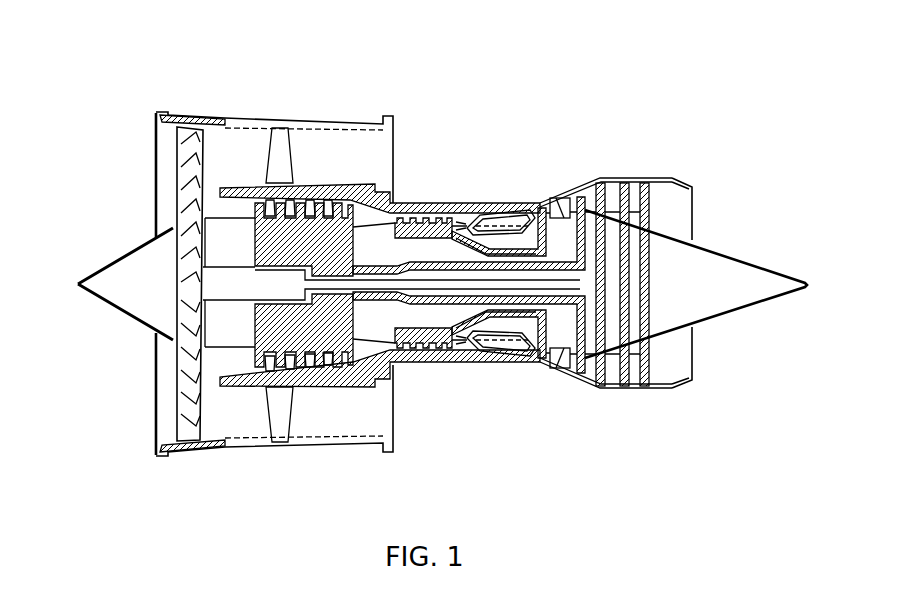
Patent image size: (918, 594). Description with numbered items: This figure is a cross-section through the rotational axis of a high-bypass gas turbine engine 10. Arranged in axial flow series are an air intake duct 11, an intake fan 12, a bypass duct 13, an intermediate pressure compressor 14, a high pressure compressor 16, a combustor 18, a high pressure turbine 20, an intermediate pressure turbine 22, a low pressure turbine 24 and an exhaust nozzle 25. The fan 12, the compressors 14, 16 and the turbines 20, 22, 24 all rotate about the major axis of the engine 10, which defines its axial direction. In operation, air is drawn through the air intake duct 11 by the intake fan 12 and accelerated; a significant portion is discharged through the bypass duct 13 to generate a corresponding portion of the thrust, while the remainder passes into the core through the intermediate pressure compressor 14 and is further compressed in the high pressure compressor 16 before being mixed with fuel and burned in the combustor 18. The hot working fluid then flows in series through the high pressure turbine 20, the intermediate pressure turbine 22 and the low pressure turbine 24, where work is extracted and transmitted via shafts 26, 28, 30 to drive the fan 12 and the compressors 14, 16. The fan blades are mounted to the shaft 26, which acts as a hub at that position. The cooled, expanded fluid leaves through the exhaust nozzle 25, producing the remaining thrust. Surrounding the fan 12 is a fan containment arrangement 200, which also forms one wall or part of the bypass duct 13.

The high-bypass gas turbine engine 10 is at (495, 68).
The air intake duct 11 is at (163, 148).
The intake fan 12 is at (190, 190).
The bypass duct 13 is at (372, 167).
The intermediate pressure compressor 14 is at (240, 190).
The high pressure compressor 16 is at (437, 210).
The combustor 18 is at (506, 217).
The high pressure turbine 20 is at (542, 209).
The intermediate pressure turbine 22 is at (596, 178).
The low pressure turbine 24 is at (661, 176).
The exhaust nozzle 25 is at (687, 222).
The shaft 26 is at (227, 287).
The shaft 28 is at (449, 305).
The shaft 30 is at (508, 312).
The fan containment arrangement 200 is at (207, 486).